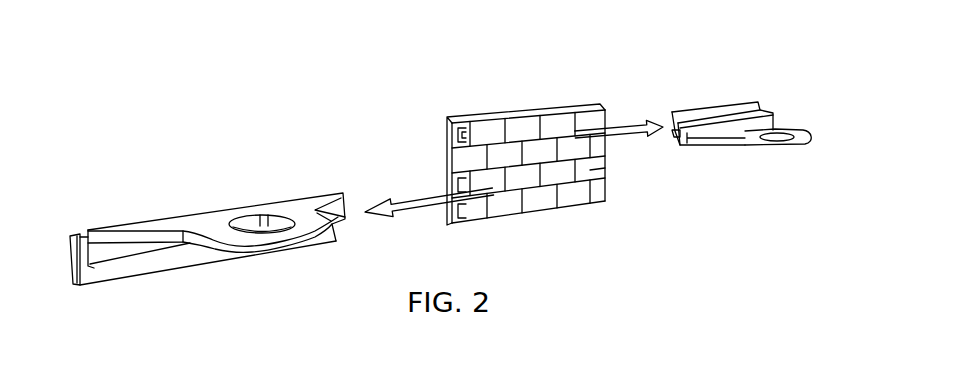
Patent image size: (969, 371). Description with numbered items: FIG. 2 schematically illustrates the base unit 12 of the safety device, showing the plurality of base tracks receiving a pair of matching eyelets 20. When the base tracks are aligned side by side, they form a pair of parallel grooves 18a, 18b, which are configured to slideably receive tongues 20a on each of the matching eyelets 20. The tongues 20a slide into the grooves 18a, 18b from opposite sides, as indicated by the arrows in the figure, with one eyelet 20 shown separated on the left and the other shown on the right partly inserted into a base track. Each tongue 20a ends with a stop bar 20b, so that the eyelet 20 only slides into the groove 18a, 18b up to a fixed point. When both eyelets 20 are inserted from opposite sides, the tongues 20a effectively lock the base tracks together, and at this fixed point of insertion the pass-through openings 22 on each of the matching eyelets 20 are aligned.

The base unit 12 is at (523, 84).
The parallel groove 18a is at (468, 150).
The parallel groove 18b is at (587, 180).
The matching eyelet 20 is at (187, 220).
The tongue 20a is at (147, 275).
The stop bar 20b is at (80, 237).
The pass-through opening 22 is at (282, 217).